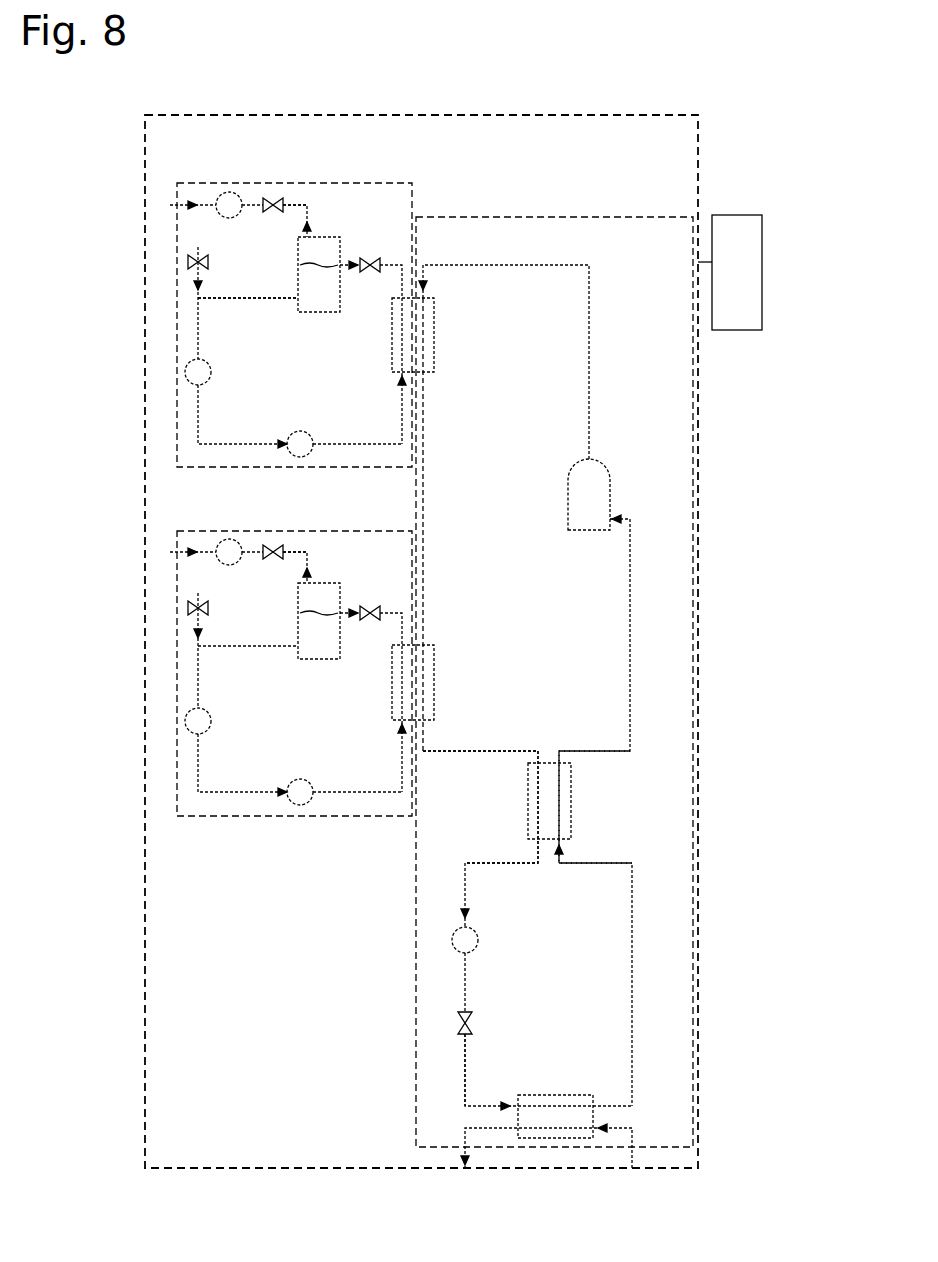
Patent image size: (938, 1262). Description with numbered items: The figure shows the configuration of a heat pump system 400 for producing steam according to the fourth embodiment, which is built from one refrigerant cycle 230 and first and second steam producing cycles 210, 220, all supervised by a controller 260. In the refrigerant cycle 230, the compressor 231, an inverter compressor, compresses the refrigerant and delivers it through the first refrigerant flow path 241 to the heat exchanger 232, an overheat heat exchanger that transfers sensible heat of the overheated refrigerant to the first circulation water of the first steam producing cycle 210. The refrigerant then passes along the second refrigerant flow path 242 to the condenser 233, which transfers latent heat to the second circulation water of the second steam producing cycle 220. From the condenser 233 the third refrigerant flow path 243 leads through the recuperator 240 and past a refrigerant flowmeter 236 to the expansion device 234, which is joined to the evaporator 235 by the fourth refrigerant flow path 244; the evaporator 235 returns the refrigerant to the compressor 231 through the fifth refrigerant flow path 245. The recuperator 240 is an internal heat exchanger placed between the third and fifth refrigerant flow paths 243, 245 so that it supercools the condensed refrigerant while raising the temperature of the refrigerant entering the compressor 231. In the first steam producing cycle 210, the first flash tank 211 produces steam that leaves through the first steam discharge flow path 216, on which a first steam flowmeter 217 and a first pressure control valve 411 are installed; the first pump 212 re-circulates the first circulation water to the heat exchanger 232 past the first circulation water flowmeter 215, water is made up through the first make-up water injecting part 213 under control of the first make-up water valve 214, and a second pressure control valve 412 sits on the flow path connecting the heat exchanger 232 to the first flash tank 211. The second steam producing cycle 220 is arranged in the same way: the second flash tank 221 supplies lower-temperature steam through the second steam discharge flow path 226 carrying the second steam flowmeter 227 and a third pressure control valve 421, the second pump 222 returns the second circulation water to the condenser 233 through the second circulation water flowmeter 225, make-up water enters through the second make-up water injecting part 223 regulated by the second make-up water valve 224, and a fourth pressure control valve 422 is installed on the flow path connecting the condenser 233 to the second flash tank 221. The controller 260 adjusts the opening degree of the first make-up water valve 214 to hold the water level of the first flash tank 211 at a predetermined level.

The heat pump system for producing steam 400 is at (476, 86).
The first steam producing cycle 210 is at (385, 183).
The second steam producing cycle 220 is at (383, 531).
The refrigerant cycle 230 is at (620, 217).
The controller 260 is at (735, 215).
The first flash tank 211 is at (332, 237).
The first pump 212 is at (212, 371).
The first make-up water injecting part 213 is at (201, 284).
The first make-up water valve 214 is at (207, 262).
The first circulation water flowmeter 215 is at (300, 431).
The first steam discharge flow path 216 is at (308, 200).
The first steam flowmeter 217 is at (229, 192).
The first pressure control valve 411 is at (277, 198).
The second pressure control valve 412 is at (374, 260).
The second flash tank 221 is at (332, 583).
The second pump 222 is at (212, 720).
The second make-up water injecting part 223 is at (201, 630).
The second make-up water valve 224 is at (207, 608).
The second circulation water flowmeter 225 is at (300, 779).
The second steam discharge flow path 226 is at (308, 548).
The second steam flowmeter 227 is at (229, 539).
The third pressure control valve 421 is at (276, 545).
The fourth pressure control valve 422 is at (374, 608).
The compressor 231 is at (603, 462).
The heat exchanger 232 is at (436, 330).
The condenser 233 is at (436, 678).
The expansion device 234 is at (470, 1030).
The evaporator 235 is at (566, 1095).
The refrigerant flowmeter 236 is at (478, 941).
The recuperator 240 is at (572, 801).
The first refrigerant flow path 241 is at (508, 265).
The second refrigerant flow path 242 is at (425, 477).
The third refrigerant flow path 243 is at (498, 752).
The fourth refrigerant flow path 244 is at (466, 1088).
The fifth refrigerant flow path 245 is at (612, 752).